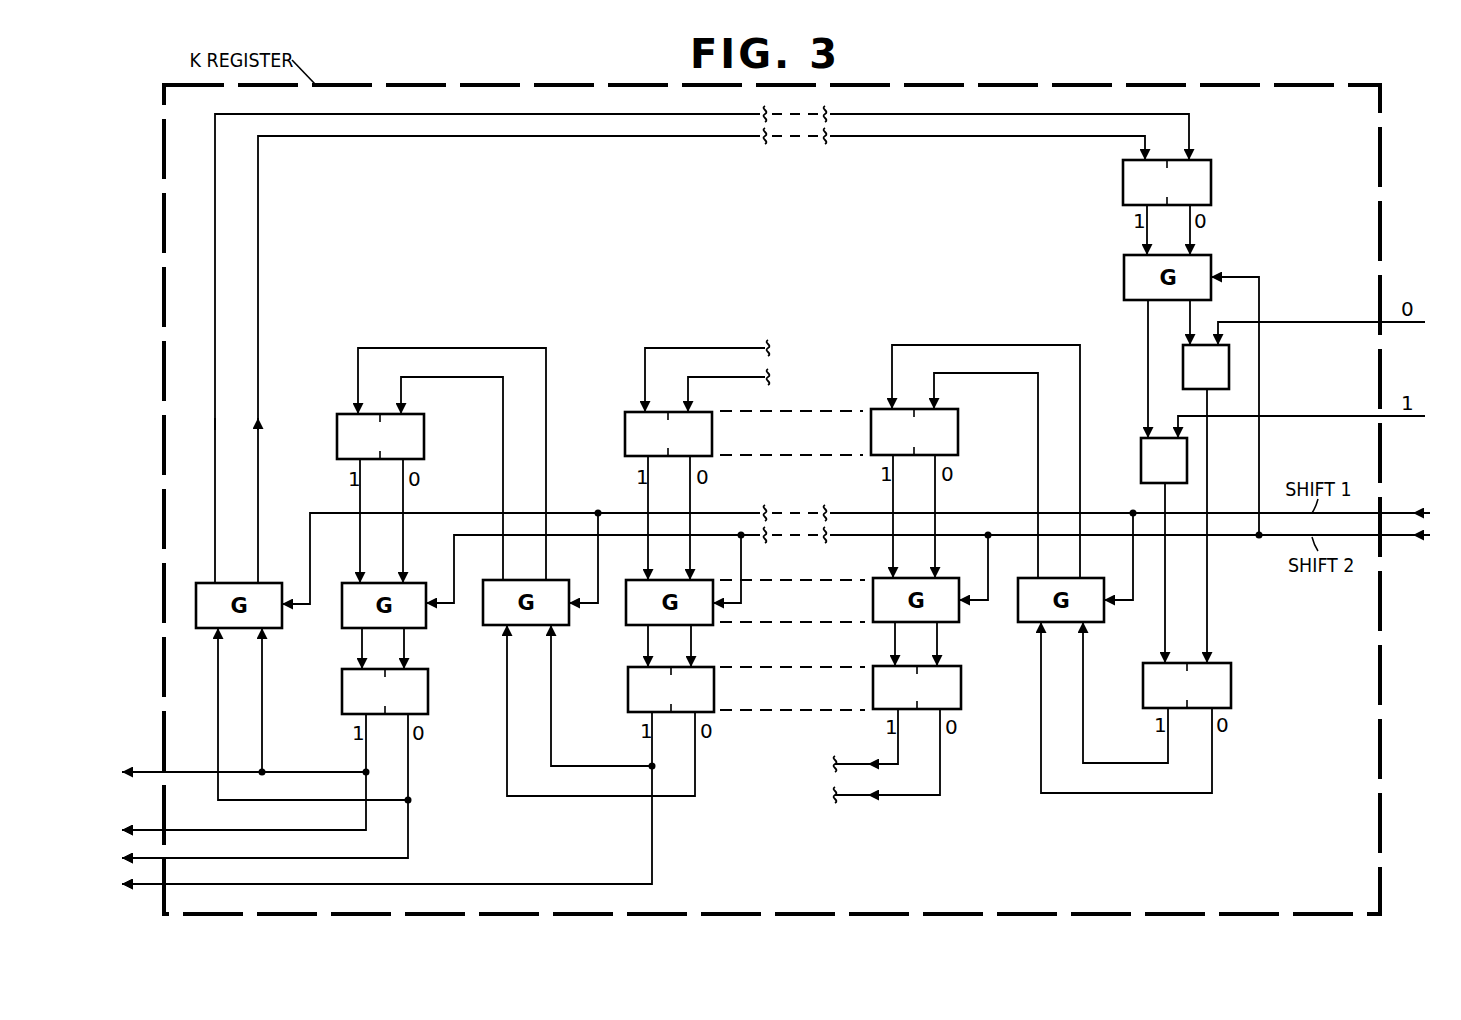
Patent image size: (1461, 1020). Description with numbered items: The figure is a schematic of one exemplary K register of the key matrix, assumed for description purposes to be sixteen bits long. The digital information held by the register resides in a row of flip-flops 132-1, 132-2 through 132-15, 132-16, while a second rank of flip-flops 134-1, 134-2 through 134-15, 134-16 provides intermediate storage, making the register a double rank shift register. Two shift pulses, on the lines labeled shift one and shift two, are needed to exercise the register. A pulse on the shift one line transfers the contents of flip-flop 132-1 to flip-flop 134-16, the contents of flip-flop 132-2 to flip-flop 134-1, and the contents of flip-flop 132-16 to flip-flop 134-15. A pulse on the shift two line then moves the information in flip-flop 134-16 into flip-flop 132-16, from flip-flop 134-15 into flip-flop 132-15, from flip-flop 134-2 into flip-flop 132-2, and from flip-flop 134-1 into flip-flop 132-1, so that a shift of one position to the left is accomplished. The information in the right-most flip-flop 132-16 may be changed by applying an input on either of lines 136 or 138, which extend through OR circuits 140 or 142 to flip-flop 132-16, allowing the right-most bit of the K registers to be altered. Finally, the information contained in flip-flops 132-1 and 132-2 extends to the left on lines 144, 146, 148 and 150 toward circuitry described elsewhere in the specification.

The flip-flop 132-1 is at (428, 692).
The flip-flop 132-2 is at (628, 689).
The flip-flop 132-15 is at (961, 689).
The flip-flop 132-16 is at (1231, 685).
The flip-flop 134-1 is at (424, 437).
The flip-flop 134-2 is at (625, 434).
The flip-flop 134-15 is at (958, 433).
The flip-flop 134-16 is at (1211, 182).
The input line 136 is at (1312, 322).
The input line 138 is at (1320, 406).
The OR circuit 140 is at (1229, 368).
The OR circuit 142 is at (1141, 455).
The line 144 is at (132, 772).
The line 146 is at (136, 830).
The line 148 is at (134, 858).
The line 150 is at (140, 887).